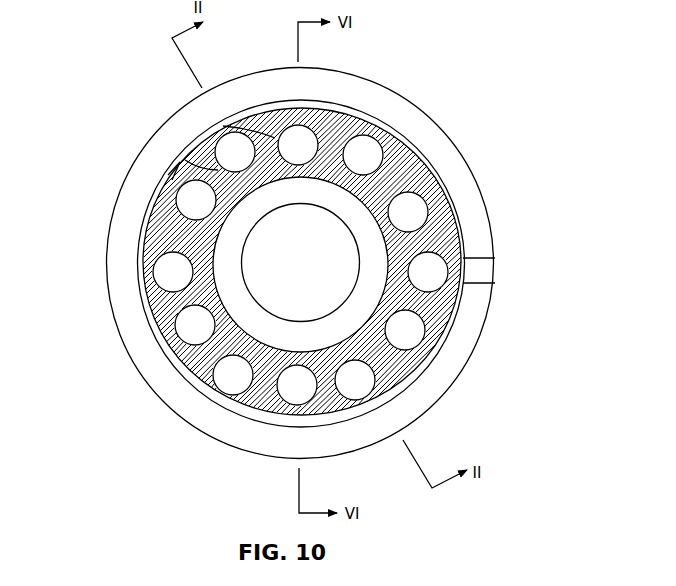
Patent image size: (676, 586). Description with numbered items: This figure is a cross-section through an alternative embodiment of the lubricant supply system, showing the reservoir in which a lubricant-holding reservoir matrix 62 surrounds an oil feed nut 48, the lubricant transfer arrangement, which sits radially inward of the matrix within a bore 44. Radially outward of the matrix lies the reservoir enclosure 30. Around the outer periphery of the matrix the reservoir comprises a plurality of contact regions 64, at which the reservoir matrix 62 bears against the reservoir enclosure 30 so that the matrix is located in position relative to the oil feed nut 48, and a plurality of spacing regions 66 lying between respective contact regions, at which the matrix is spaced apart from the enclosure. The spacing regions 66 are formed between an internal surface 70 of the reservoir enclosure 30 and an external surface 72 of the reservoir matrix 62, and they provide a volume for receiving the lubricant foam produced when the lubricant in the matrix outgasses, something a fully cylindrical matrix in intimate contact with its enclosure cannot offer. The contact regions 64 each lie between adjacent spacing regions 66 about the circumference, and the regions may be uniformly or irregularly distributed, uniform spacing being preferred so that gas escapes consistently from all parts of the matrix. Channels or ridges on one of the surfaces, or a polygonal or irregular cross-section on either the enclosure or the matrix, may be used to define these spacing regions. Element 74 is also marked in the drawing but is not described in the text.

The reservoir enclosure 30 is at (448, 158).
The bore 44 is at (365, 303).
The oil feed nut 48 is at (306, 266).
The reservoir matrix 62 is at (495, 283).
The contact regions 64 is at (383, 120).
The spacing regions 66 is at (297, 103).
The internal surface 70 is at (192, 133).
The external surface 72 is at (178, 162).
The opening 74 is at (197, 323).